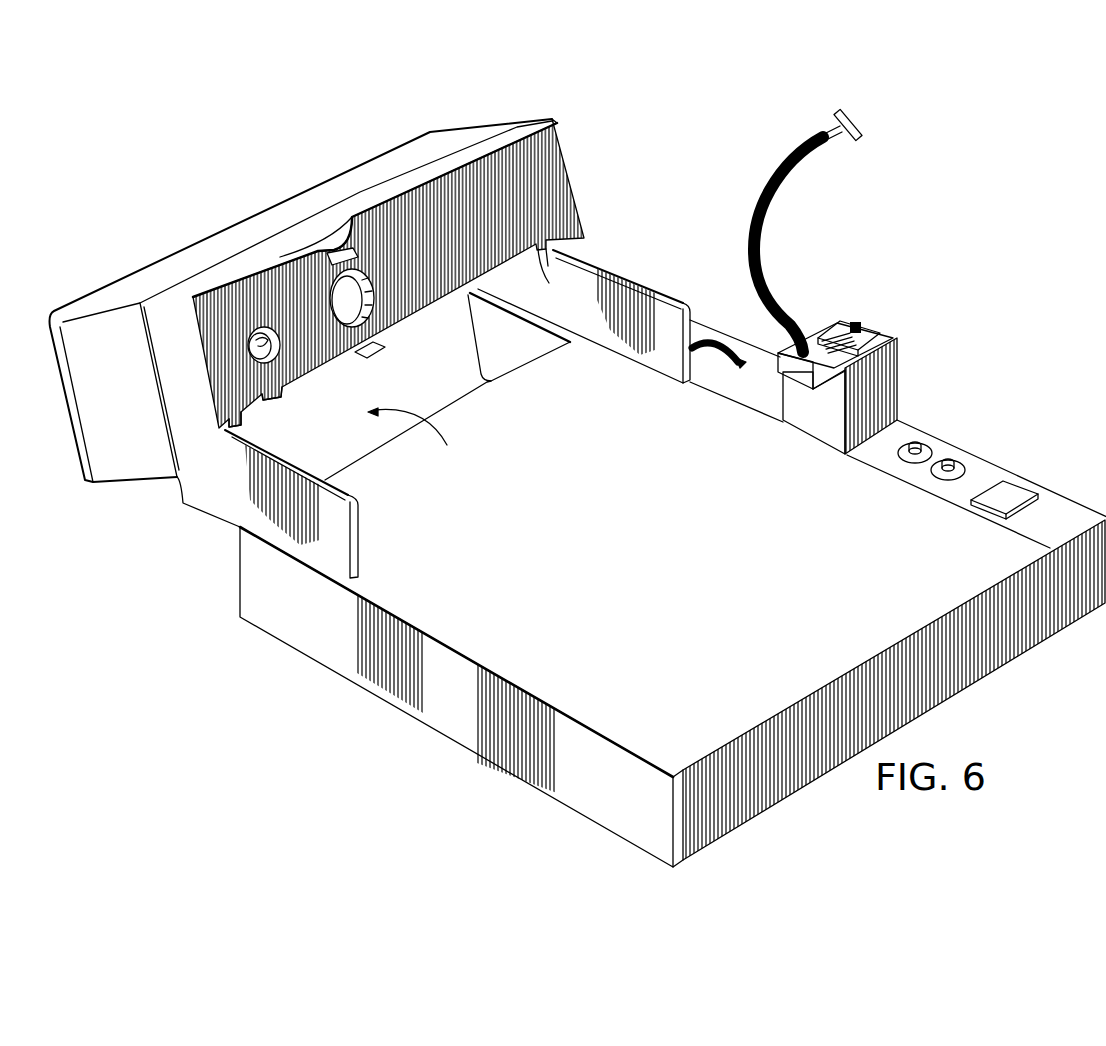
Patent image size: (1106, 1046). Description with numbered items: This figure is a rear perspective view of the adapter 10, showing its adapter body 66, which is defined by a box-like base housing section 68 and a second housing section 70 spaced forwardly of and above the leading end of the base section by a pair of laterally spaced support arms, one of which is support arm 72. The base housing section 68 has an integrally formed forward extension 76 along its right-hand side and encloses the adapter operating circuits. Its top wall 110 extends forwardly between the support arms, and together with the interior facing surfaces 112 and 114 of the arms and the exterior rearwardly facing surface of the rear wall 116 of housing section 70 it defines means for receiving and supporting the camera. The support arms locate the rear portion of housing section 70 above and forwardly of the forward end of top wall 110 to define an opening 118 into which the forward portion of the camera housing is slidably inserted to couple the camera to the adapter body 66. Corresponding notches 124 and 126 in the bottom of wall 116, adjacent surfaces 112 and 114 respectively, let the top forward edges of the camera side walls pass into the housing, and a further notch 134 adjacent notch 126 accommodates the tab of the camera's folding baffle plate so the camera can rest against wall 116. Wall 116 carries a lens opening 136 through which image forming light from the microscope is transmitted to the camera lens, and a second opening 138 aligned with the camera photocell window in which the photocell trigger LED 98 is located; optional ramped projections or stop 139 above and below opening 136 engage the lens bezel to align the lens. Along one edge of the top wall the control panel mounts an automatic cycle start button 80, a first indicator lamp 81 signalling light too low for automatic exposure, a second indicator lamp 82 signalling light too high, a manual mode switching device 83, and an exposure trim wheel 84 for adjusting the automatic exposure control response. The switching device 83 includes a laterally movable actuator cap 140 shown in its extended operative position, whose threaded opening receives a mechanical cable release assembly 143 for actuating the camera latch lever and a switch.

The adapter 10 is at (910, 193).
The adapter body 66 is at (237, 537).
The base housing section 68 is at (435, 730).
The second housing section 70 is at (556, 118).
The support arm 72 is at (620, 276).
The forward extension 76 is at (473, 366).
The automatic cycle start button 80 is at (1010, 490).
The first indicator lamp 81 is at (949, 461).
The second indicator lamp 82 is at (916, 444).
The manual mode switching device 83 is at (898, 367).
The exposure trim wheel 84 is at (708, 343).
The photocell trigger LED 98 is at (270, 343).
The top wall 110 is at (663, 733).
The interior facing surface 112 is at (670, 357).
The interior facing surface 114 is at (343, 488).
The rear wall 116 is at (562, 165).
The opening 118 is at (415, 439).
The notch 124 is at (547, 270).
The notch 126 is at (242, 427).
The notch 134 is at (272, 399).
The lens opening 136 is at (363, 307).
The second opening 138 is at (275, 330).
The ramped projections 139 is at (355, 250).
The actuator cap 140 is at (847, 320).
The mechanical cable release assembly 143 is at (786, 307).